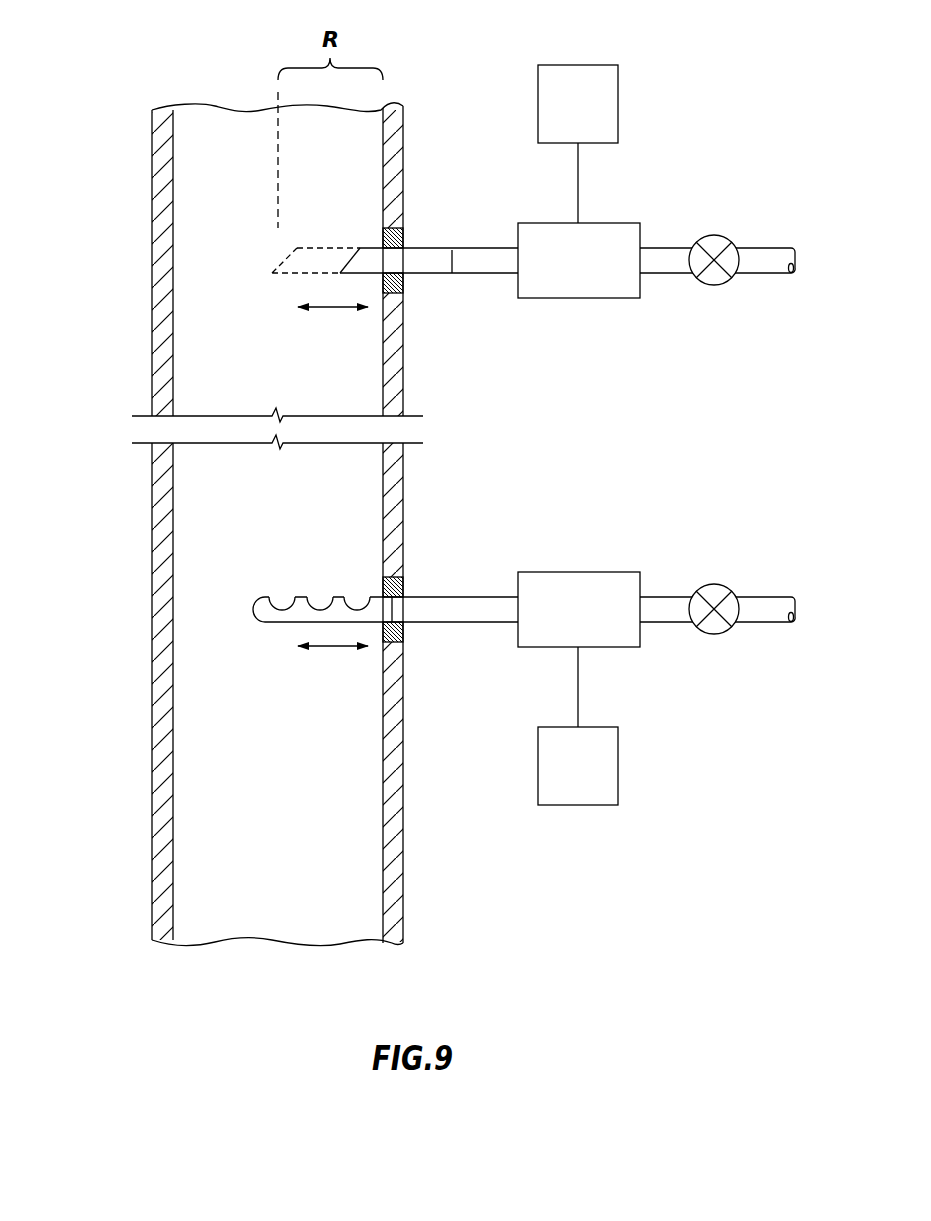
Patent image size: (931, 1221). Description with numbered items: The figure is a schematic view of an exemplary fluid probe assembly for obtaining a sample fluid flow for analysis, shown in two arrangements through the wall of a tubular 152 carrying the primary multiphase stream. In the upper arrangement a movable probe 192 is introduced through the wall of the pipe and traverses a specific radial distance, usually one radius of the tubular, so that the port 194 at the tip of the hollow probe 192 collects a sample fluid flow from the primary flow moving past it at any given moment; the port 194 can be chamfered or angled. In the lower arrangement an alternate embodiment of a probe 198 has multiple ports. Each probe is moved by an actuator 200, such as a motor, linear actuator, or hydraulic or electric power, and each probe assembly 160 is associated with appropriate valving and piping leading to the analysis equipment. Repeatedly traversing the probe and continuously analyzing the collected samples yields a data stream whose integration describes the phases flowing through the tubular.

The wall / casing 152 is at (152, 340).
The sampling assembly 160 is at (669, 435).
The movable probe 192 is at (375, 248).
The port 194 is at (343, 268).
The probe 198 is at (607, 556).
The actuator 200 is at (598, 115).